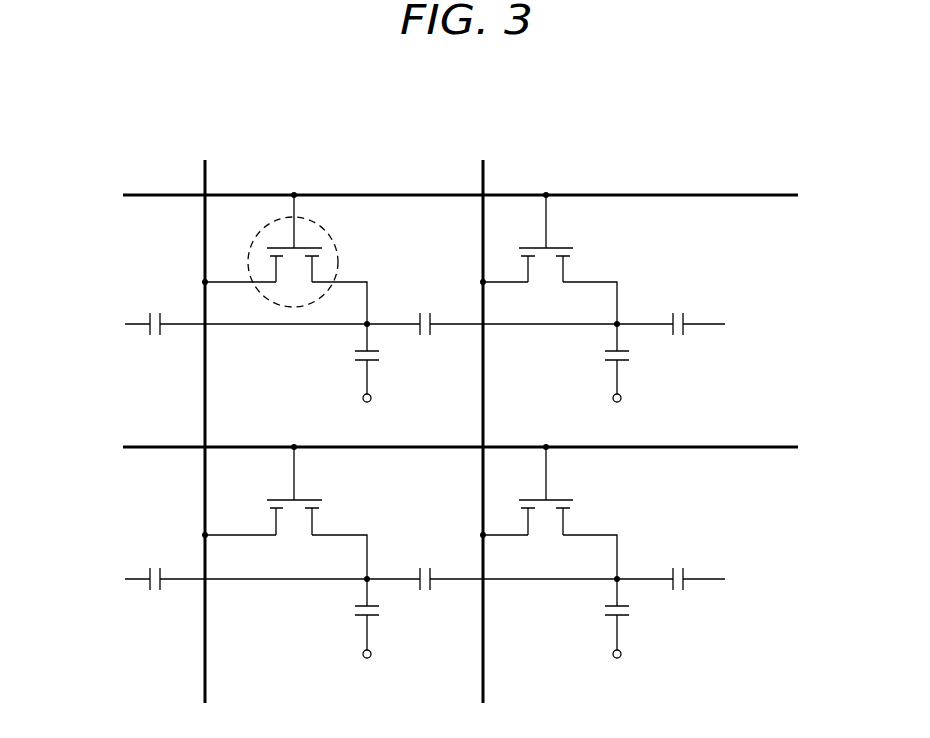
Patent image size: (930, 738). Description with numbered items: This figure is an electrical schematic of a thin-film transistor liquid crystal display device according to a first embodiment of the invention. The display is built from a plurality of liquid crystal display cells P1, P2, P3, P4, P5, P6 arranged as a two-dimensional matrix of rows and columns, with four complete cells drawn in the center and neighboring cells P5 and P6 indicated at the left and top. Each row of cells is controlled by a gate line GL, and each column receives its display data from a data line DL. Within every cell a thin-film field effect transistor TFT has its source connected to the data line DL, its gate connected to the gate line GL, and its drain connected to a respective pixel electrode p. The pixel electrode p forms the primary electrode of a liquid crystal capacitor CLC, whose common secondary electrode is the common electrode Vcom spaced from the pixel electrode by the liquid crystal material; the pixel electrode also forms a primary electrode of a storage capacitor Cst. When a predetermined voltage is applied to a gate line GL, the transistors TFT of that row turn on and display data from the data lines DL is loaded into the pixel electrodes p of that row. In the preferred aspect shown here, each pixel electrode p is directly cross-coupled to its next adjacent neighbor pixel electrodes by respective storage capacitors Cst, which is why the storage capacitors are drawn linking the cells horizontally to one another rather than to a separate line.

The data line DL is at (204, 181).
The gate line GL is at (752, 195).
The thin-film field effect transistor TFT is at (334, 242).
The pixel electrode p is at (356, 283).
The storage capacitor Cst is at (425, 456).
The liquid crystal capacitor CLC is at (466, 487).
The common electrode Vcom is at (494, 538).
The liquid crystal display cell P1 is at (275, 408).
The liquid crystal display cell P2 is at (553, 408).
The liquid crystal display cell P3 is at (275, 673).
The liquid crystal display cell P4 is at (553, 673).
The liquid crystal display cell P5 is at (105, 409).
The liquid crystal display cell P6 is at (330, 141).